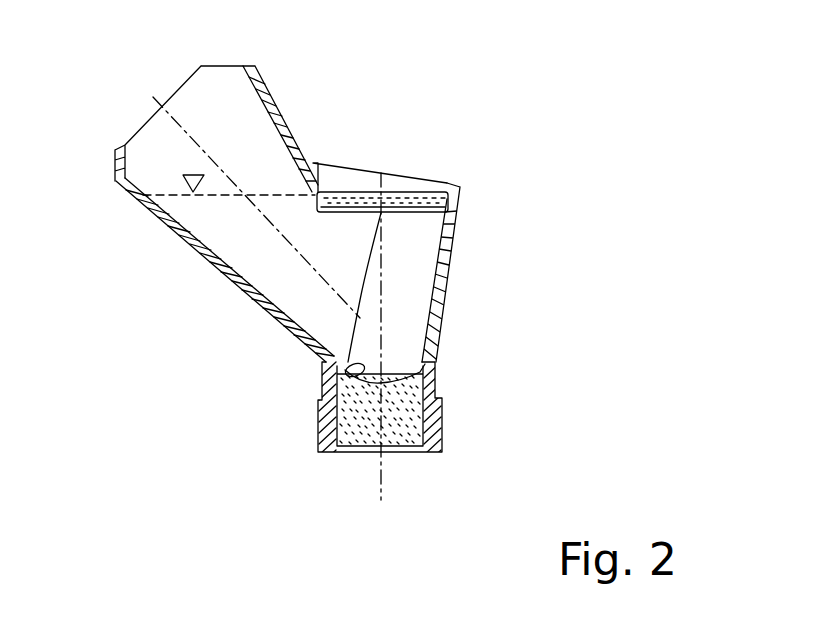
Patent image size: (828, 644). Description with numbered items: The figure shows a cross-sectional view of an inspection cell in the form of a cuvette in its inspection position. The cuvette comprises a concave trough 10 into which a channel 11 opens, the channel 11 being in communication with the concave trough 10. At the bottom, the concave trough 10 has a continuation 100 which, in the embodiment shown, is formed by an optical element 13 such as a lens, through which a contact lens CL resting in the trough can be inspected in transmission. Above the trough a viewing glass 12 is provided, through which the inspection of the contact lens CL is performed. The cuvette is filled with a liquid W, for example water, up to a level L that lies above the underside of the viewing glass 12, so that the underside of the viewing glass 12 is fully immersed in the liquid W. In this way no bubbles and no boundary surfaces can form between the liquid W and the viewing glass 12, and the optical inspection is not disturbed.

The concave trough 10 is at (417, 361).
The continuation 100 is at (400, 380).
The channel 11 is at (243, 150).
The viewing glass 12 is at (405, 190).
The optical element 13 is at (360, 433).
The level L is at (192, 172).
The liquid W is at (227, 222).
The contact lens CL is at (345, 365).